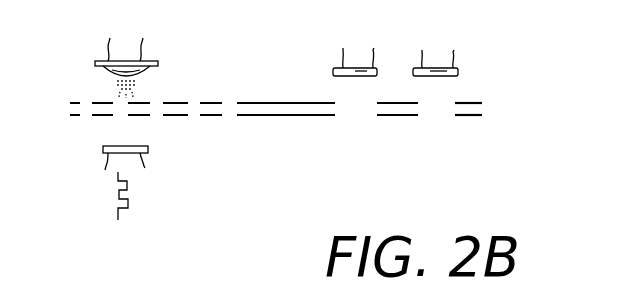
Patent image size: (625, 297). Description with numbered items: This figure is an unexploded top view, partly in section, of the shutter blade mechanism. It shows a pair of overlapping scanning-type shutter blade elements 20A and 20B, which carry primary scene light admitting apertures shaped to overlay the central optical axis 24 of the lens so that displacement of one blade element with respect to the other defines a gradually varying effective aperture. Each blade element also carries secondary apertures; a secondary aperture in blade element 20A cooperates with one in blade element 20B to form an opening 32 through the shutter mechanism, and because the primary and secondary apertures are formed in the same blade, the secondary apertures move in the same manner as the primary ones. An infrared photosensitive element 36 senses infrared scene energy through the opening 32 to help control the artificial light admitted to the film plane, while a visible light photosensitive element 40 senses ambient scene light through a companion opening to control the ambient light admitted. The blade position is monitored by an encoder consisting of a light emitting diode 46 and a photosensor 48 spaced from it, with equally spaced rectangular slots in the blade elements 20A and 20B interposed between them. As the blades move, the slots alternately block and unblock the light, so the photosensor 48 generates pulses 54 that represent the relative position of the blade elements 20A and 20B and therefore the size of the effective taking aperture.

The shutter blade element 20A is at (475, 117).
The shutter blade element 20B is at (463, 100).
The central optical axis 24 is at (437, 116).
The opening 32 is at (360, 114).
The infrared photosensitive element 36 is at (333, 74).
The visible light photosensitive element 40 is at (458, 72).
The light emitting diode 46 is at (158, 63).
The photosensor 48 is at (103, 148).
The pulses 54 is at (153, 204).